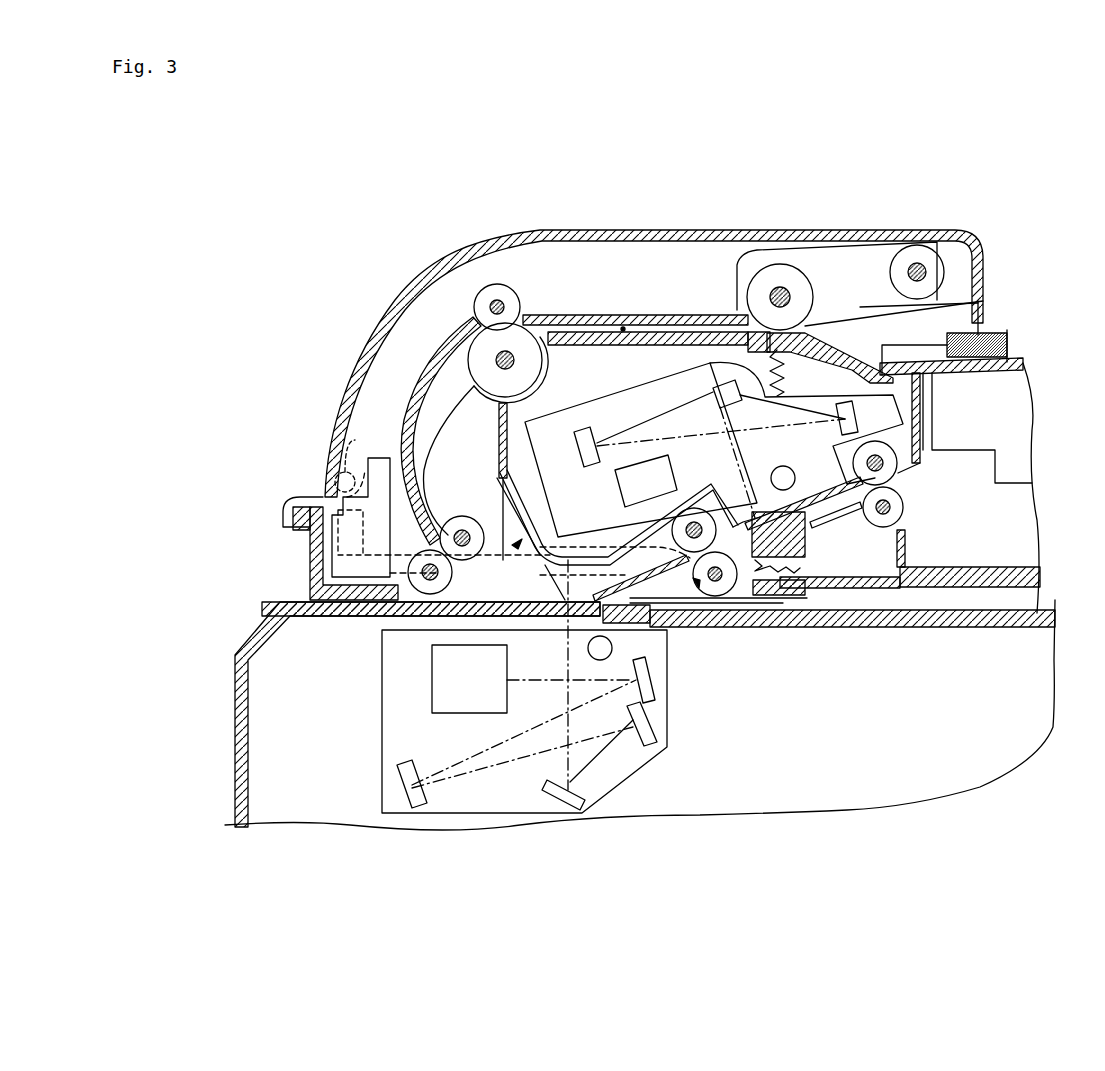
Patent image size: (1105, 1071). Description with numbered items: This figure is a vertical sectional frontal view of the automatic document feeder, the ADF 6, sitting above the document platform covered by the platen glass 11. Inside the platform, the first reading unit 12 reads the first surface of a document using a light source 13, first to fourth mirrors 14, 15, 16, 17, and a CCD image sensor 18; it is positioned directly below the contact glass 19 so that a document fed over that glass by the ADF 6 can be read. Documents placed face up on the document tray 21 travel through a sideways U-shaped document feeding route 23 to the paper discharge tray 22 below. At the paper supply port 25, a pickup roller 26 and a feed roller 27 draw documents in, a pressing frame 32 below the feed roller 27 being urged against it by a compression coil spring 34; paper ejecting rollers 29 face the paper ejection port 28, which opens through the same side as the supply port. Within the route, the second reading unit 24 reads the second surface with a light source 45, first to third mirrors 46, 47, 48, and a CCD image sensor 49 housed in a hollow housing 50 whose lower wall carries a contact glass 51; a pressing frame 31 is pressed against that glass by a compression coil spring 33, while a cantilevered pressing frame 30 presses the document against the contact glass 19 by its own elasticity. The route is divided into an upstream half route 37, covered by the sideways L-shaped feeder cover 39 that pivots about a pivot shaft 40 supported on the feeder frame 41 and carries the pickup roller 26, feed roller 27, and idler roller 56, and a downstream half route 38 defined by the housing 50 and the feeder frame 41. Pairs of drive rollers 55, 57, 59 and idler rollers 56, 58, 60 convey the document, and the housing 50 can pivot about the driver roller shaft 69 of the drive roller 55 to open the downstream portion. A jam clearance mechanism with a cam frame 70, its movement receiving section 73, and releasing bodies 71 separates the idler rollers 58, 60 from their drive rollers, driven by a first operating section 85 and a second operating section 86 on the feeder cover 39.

The ADF 6 is at (654, 346).
The platen glass 11 is at (950, 622).
The first reading unit 12 is at (375, 690).
The light source 13 is at (614, 652).
The first mirror 14 is at (548, 793).
The second mirror 15 is at (656, 720).
The third mirror 16 is at (408, 765).
The fourth mirror 17 is at (656, 675).
The CCD image sensor 18 is at (480, 718).
The contact glass 19 is at (570, 613).
The document tray 21 is at (1012, 350).
The paper discharge tray 22 is at (1020, 567).
The document feeding route 23 is at (404, 395).
The second reading unit 24 is at (637, 385).
The paper supply port 25 is at (978, 322).
The pickup roller 26 is at (917, 262).
The feed roller 27 is at (763, 288).
The paper ejection port 28 is at (898, 478).
The paper ejecting rollers 29 is at (866, 512).
The pressing frame 30 is at (575, 556).
The pressing frame 31 is at (828, 545).
The pressing frame 32 is at (840, 352).
The compression coil spring 33 is at (805, 580).
The compression coil spring 34 is at (788, 380).
The upstream half route 37 is at (622, 326).
The downstream half route 38 is at (497, 582).
The feeder cover 39 is at (672, 231).
The pivot shaft 40 is at (338, 468).
The feeder frame 41 is at (305, 560).
The light source 45 is at (792, 472).
The first mirror 46 is at (710, 386).
The second mirror 47 is at (581, 426).
The third mirror 48 is at (856, 420).
The CCD image sensor 49 is at (615, 482).
The housing 50 is at (676, 332).
The contact glass 51 is at (742, 520).
The drive roller 55 is at (478, 385).
The idler roller 56 is at (507, 298).
The drive roller 57 is at (477, 526).
The idler roller 58 is at (431, 590).
The drive roller 59 is at (697, 518).
The idler roller 60 is at (718, 596).
The driver roller shaft 69 is at (504, 366).
The cam frame 70 is at (535, 512).
The releasing body 71 is at (703, 608).
The movement receiving section 73 is at (362, 533).
The first operating section 85 is at (318, 493).
The second operating section 86 is at (380, 458).